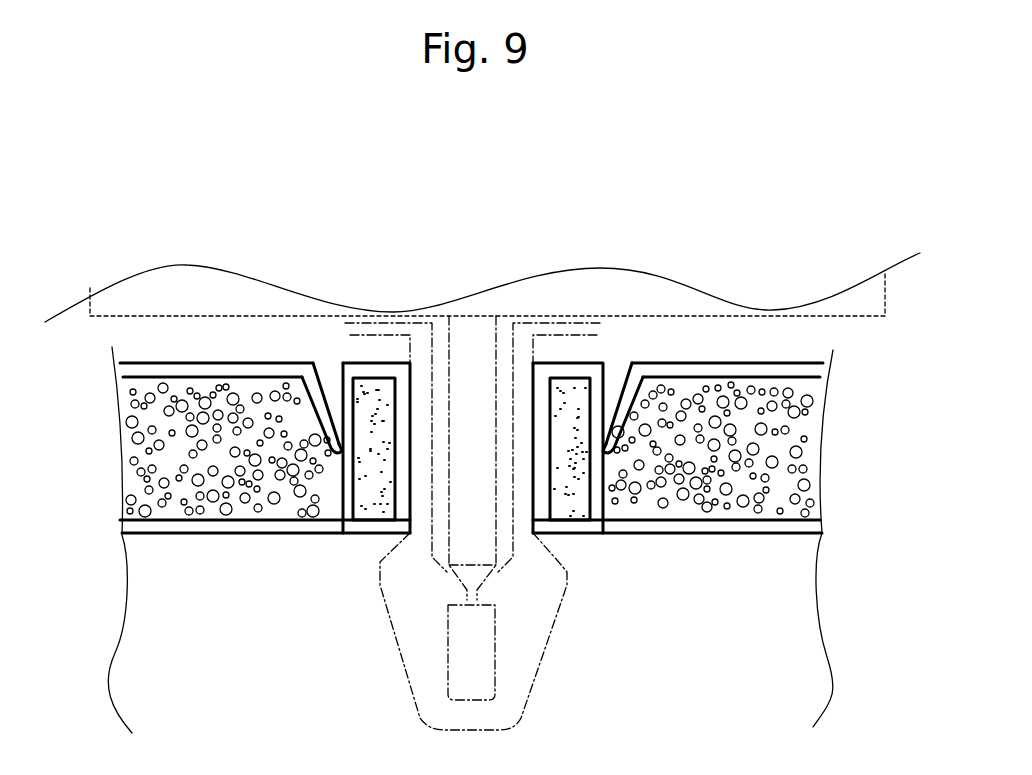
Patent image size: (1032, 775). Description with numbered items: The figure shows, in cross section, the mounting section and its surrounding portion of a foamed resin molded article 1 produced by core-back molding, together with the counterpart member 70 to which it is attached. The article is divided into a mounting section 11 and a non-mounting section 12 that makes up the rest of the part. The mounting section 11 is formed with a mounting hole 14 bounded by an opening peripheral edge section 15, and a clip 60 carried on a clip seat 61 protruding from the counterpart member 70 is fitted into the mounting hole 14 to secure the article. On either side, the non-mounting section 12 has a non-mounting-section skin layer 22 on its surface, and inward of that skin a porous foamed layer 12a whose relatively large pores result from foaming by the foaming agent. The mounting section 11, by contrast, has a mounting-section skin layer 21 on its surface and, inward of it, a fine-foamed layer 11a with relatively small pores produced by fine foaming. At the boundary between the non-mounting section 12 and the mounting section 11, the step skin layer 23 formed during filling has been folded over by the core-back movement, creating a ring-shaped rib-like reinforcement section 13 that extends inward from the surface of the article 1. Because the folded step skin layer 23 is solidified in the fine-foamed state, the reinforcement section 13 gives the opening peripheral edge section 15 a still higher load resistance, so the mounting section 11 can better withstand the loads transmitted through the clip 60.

The foamed resin molded article 1 is at (660, 190).
The mounting section 11 is at (405, 195).
The fine-foamed layer 11a is at (362, 422).
The non-mounting section 12 is at (467, 381).
The foamed layer 12a is at (398, 445).
The reinforcement section 13 is at (332, 372).
The mounting hole 14 is at (470, 358).
The opening peripheral edge section 15 is at (372, 347).
The mounting-section skin layer 21 is at (382, 372).
The non-mounting-section skin layer 22 is at (165, 374).
The step skin layer 23 is at (353, 472).
The clip 60 is at (494, 631).
The clip seat 61 is at (465, 533).
The counterpart member 70 is at (113, 302).